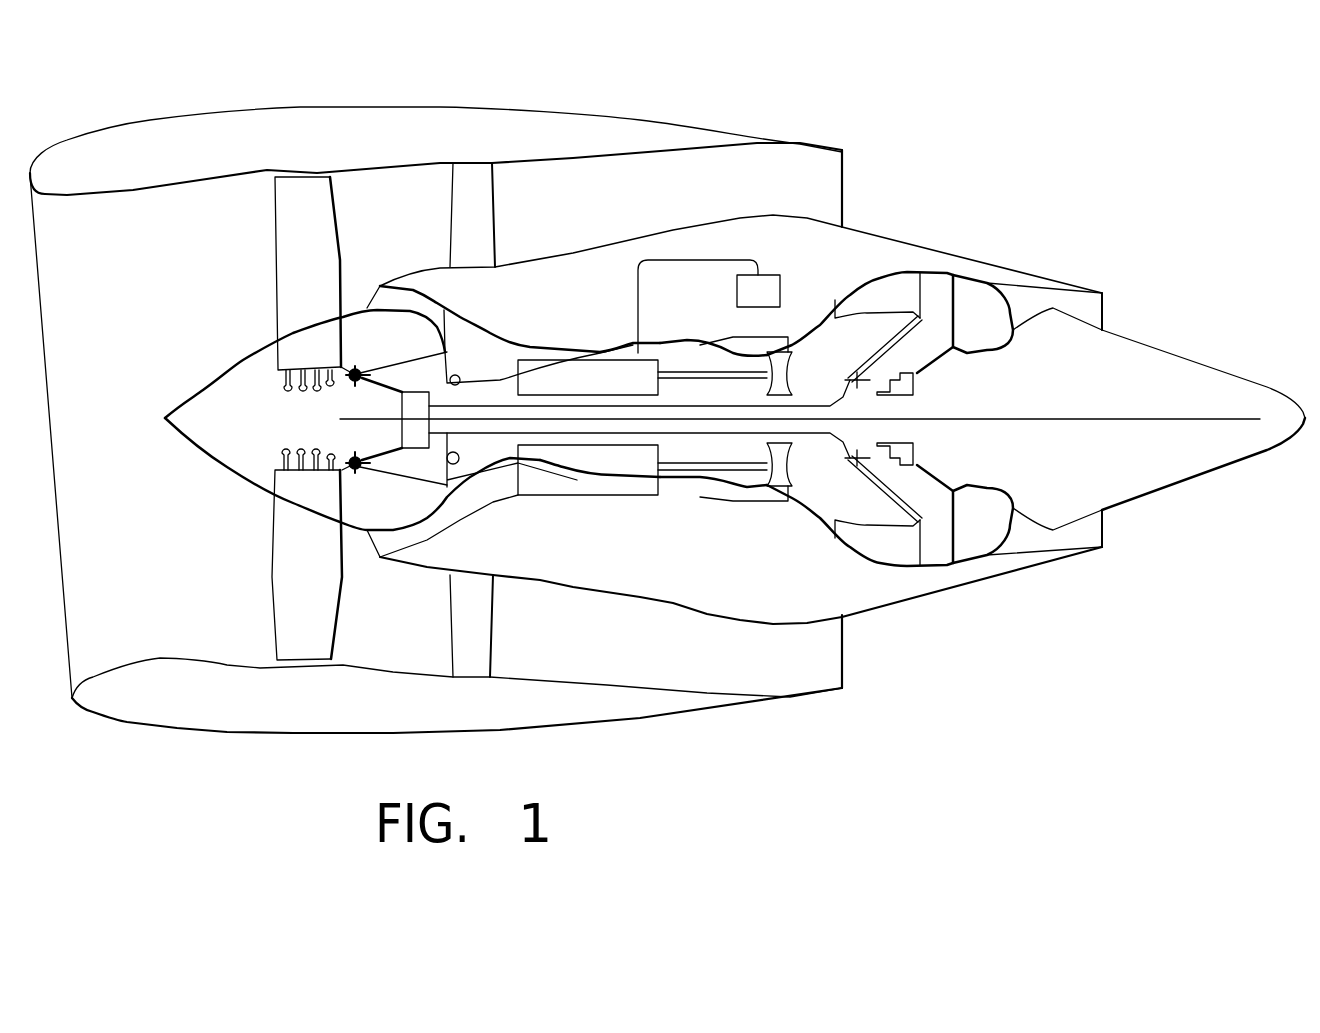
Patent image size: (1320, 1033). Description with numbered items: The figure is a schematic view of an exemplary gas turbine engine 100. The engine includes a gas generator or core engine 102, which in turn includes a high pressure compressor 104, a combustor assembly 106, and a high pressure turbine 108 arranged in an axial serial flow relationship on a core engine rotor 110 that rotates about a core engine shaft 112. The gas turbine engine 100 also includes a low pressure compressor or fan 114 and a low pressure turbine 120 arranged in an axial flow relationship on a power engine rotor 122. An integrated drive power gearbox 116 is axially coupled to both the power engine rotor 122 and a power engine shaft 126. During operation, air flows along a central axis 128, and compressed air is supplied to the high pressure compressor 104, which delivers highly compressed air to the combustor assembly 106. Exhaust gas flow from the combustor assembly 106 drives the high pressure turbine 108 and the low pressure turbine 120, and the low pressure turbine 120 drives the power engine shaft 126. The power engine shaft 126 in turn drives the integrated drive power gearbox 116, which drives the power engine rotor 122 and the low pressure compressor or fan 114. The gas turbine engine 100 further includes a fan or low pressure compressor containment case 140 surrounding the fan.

The gas turbine engine 100 is at (797, 126).
The core engine 102 is at (690, 420).
The high pressure compressor 104 is at (541, 357).
The combustor assembly 106 is at (731, 357).
The high pressure turbine 108 is at (778, 500).
The core engine rotor 110 is at (870, 336).
The core engine shaft 112 is at (690, 378).
The low pressure compressor or fan 114 is at (295, 583).
The integrated drive power gearbox 116 is at (402, 402).
The low pressure turbine 120 is at (878, 292).
The power engine rotor 122 is at (388, 382).
The power engine shaft 126 is at (563, 435).
The central axis 128 is at (1000, 420).
The fan or low pressure compressor containment case 140 is at (317, 132).